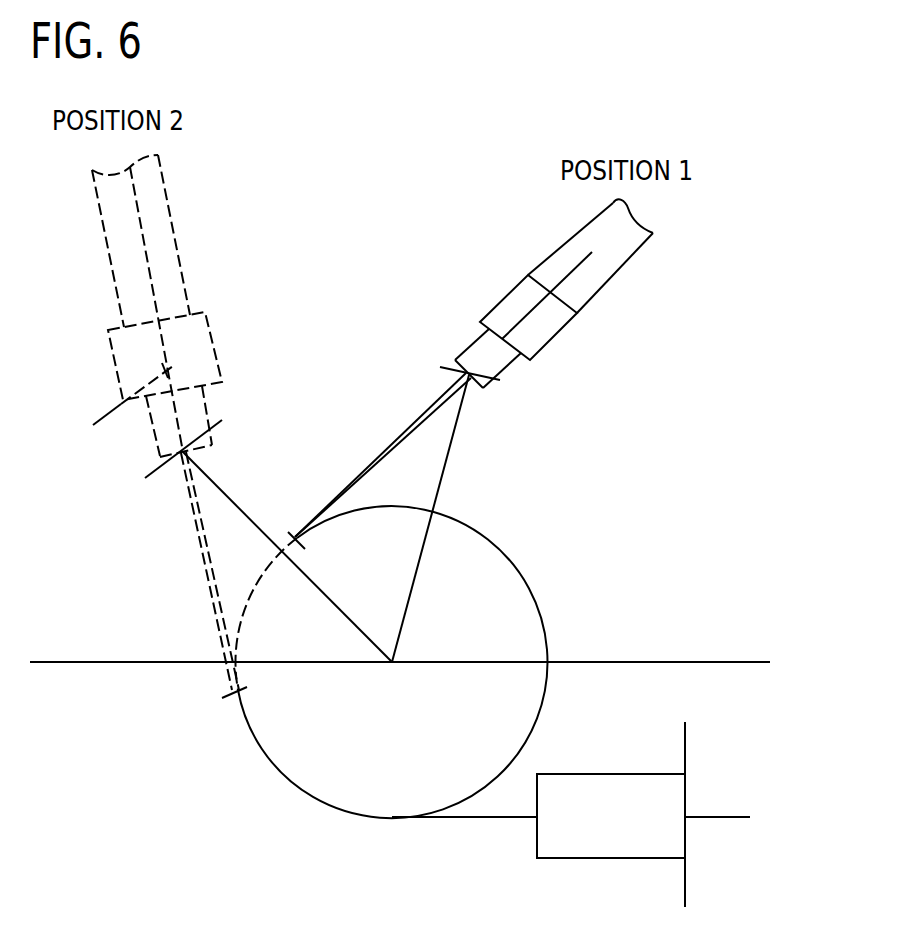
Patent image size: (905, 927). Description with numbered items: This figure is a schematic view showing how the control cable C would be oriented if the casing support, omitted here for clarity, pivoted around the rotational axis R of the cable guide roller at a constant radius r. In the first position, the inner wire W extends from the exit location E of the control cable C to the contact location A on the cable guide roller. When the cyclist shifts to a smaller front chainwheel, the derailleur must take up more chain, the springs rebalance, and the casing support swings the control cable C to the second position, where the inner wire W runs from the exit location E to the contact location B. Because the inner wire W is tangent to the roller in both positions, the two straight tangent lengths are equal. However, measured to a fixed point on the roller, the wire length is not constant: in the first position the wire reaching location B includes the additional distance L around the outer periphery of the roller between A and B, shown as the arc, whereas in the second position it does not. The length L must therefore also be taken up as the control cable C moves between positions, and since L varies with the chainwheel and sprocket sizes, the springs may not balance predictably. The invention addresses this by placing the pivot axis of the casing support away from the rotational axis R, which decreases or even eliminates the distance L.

The control cable C is at (606, 300).
The exit location E is at (469, 379).
The inner wire W is at (352, 488).
The distance from end point to center Y is at (287, 557).
The constant radius r is at (430, 518).
The rotational axis of roller R is at (392, 662).
The distance around outer periphery of cable guide roller L is at (266, 614).
The contact location A is at (295, 537).
The contact location B is at (233, 695).